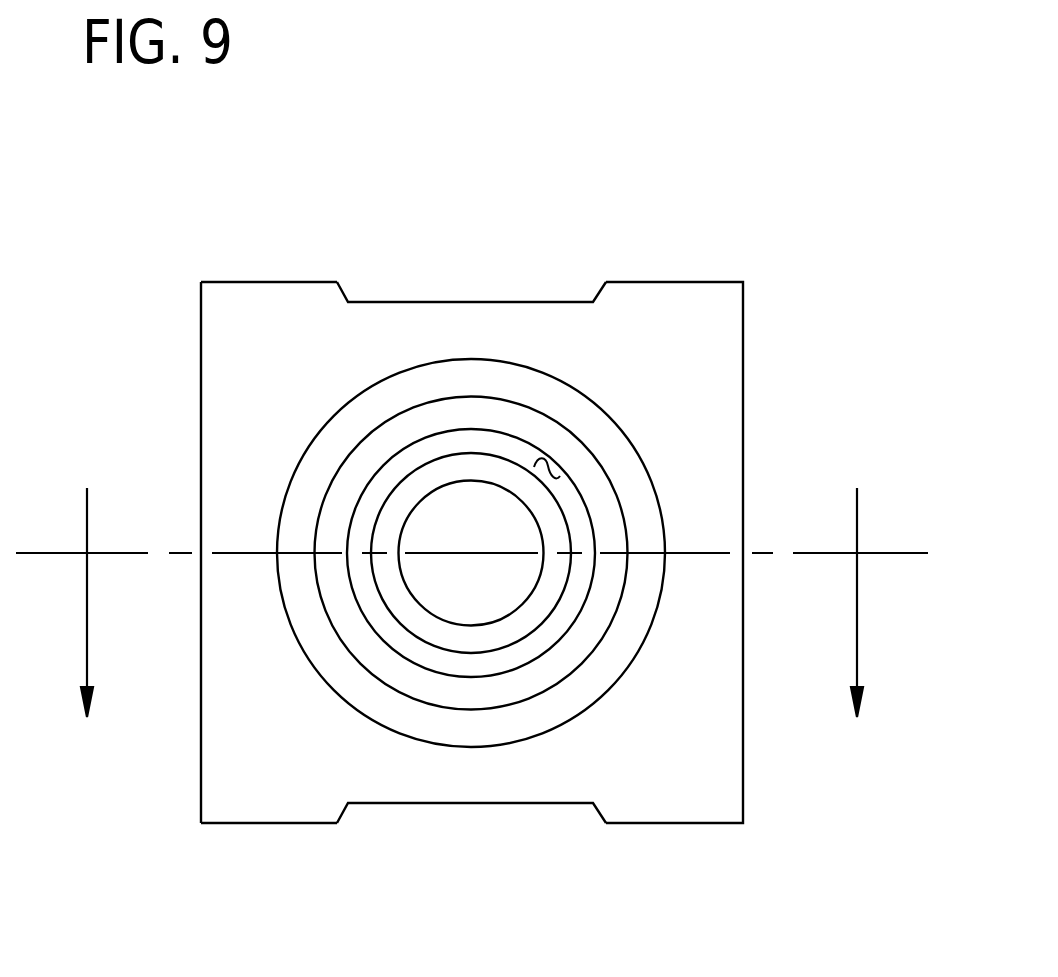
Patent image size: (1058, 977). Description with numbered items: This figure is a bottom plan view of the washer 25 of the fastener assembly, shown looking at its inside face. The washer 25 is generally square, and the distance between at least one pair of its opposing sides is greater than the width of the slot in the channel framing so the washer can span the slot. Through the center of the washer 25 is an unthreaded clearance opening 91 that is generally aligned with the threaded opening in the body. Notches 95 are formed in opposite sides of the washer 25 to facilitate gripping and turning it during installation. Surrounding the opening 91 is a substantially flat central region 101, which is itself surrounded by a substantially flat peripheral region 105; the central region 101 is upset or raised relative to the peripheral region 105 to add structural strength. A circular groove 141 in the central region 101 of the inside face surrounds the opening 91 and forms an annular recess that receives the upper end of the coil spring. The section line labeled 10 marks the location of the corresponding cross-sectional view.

The section line 10- 10 is at (472, 602).
The washer 25 is at (745, 307).
The unthreaded opening 91 is at (428, 610).
The notches 95 is at (345, 293).
The central region 101 is at (372, 458).
The peripheral region 105 is at (201, 783).
The circular groove 141 is at (548, 470).